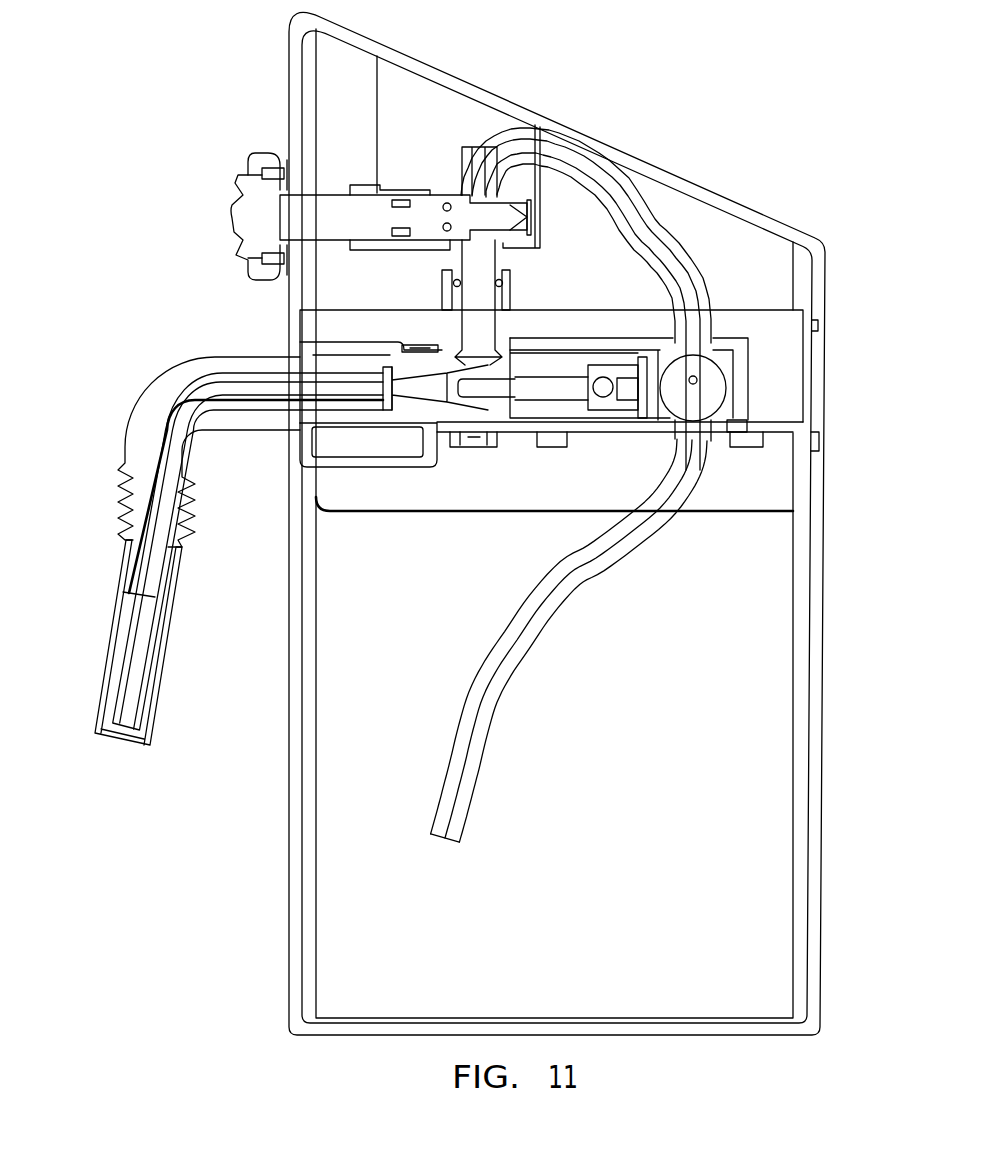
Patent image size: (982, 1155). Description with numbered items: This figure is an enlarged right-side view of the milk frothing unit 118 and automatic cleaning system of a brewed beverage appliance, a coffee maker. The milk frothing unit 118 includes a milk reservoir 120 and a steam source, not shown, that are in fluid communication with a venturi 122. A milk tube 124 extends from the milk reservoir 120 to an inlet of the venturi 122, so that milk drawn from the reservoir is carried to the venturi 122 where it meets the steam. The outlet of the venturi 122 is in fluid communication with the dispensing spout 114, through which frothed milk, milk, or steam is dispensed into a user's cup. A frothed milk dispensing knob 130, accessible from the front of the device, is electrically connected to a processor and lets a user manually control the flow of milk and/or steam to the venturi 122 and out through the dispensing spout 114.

The milk frothing unit 118 is at (628, 101).
The milk reservoir 120 is at (757, 779).
The venturi 122 is at (475, 425).
The milk tube 124 is at (497, 733).
The frothed milk dispensing knob 130 is at (243, 192).
The dispensing spout 114 is at (108, 652).